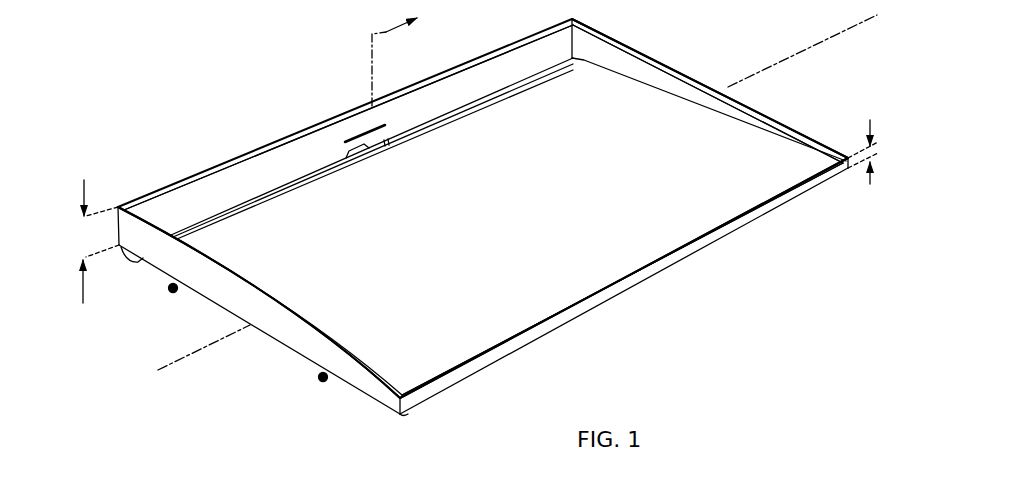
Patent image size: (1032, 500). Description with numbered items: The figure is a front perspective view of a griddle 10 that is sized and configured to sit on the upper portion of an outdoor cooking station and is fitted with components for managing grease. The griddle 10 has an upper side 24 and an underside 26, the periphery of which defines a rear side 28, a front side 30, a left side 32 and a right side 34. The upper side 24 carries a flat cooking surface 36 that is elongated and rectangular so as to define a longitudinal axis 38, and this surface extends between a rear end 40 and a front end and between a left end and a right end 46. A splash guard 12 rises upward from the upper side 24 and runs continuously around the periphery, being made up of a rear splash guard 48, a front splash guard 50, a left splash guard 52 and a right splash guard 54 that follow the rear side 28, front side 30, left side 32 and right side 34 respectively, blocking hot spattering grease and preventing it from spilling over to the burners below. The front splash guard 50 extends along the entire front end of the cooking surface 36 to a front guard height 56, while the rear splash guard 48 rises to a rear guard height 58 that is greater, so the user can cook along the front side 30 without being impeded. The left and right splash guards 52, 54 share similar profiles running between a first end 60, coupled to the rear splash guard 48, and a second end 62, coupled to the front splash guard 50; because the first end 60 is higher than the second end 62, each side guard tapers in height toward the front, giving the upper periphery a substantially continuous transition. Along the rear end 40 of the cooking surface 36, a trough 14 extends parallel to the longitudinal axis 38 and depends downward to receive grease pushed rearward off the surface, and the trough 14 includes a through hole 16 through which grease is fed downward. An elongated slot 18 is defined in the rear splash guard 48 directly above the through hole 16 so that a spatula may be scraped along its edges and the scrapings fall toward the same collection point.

The griddle 10 is at (109, 60).
The splash guard 12 is at (613, 24).
The trough 14 is at (543, 70).
The through hole 16 is at (370, 151).
The elongated slot 18 is at (356, 109).
The upper side 24 is at (656, 119).
The underside 26 is at (275, 342).
The rear side 28 is at (289, 128).
The front side 30 is at (763, 246).
The left side 32 is at (292, 373).
The right side 34 is at (713, 62).
The flat cooking surface 36 is at (438, 343).
The longitudinal axis 38 is at (839, 32).
The rear end 40 is at (478, 117).
The right end 46 is at (757, 142).
The rear splash guard 48 is at (202, 185).
The front splash guard 50 is at (593, 297).
The left splash guard 52 is at (210, 273).
The right splash guard 54 is at (717, 76).
The front guard height 56 is at (876, 173).
The rear guard height 58 is at (80, 205).
The first end 60 is at (114, 220).
The second end 62 is at (408, 412).